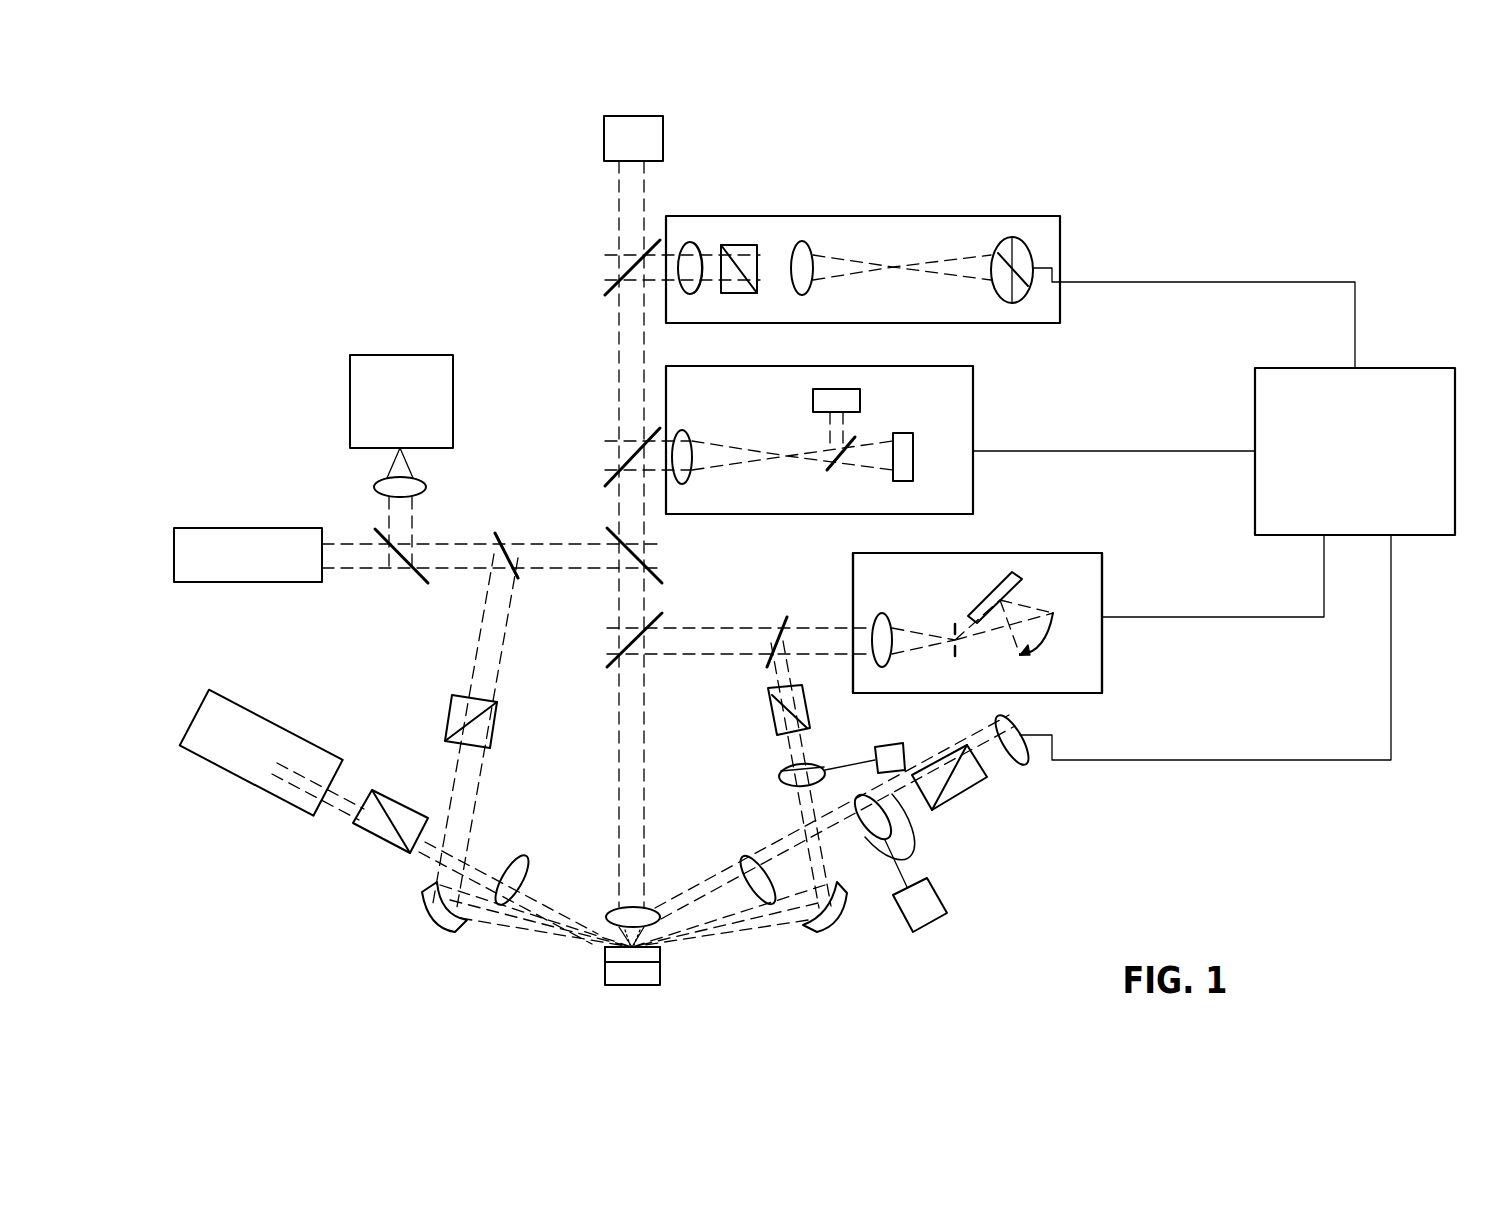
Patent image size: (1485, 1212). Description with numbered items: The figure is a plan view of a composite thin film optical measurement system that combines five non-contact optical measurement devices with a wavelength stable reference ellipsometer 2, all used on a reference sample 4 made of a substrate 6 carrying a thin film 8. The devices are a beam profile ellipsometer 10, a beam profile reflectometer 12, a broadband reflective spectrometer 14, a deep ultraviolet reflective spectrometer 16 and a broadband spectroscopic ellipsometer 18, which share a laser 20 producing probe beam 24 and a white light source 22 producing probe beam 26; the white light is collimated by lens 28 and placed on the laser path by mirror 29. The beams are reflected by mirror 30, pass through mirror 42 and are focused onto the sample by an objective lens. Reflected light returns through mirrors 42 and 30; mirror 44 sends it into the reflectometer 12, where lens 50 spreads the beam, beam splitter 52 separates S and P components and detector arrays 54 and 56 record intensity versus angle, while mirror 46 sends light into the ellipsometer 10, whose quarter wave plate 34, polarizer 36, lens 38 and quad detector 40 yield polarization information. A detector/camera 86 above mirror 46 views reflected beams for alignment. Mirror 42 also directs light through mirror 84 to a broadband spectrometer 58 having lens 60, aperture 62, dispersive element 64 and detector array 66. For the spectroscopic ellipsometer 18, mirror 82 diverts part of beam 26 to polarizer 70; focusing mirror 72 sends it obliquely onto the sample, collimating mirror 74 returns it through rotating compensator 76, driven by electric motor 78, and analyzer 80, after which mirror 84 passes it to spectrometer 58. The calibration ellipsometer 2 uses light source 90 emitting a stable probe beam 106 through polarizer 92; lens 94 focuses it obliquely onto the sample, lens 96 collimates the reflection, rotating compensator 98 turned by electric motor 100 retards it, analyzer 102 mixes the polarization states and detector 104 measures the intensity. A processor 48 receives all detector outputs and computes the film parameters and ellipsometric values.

The reference ellipsometer 2 is at (338, 818).
The reference sample 4 is at (596, 972).
The substrate 6 is at (660, 975).
The thin film 8 is at (660, 955).
The beam profile ellipsometer 10 is at (884, 216).
The beam profile reflectometer 12 is at (973, 385).
The broadband reflective spectrometer 14 is at (990, 553).
The deep ultra violet reflective spectrometer 16 is at (1010, 530).
The broadband spectroscopic ellipsometer 18 is at (526, 945).
The laser 20 is at (213, 582).
The white light source 22 is at (403, 355).
The probe beam 24 is at (387, 570).
The probe beam 26 is at (414, 510).
The lens 28 is at (423, 480).
The mirror 29 is at (420, 585).
The mirror 30 is at (655, 570).
The quarter wave plate 34 is at (690, 242).
The polarizer 36 is at (739, 245).
The lens 38 is at (805, 242).
The quad detector 40 is at (1020, 240).
The mirror 42 is at (613, 655).
The mirror 44 is at (613, 477).
The mirror 46 is at (613, 285).
The processor 48 is at (1338, 481).
The lens 50 is at (690, 435).
The beam splitter 52 is at (826, 475).
The linear detector array 54 is at (913, 455).
The linear detector array 56 is at (860, 400).
The broadband spectrometer 58 is at (1103, 572).
The lens 60 is at (888, 615).
The aperture 62 is at (958, 658).
The dispersive element 64 is at (1045, 650).
The detector array 66 is at (1022, 590).
The polarizer 70 is at (497, 725).
The focusing mirror 72 is at (433, 917).
The collimating mirror 74 is at (835, 935).
The rotating compensator 76 is at (780, 783).
The electric motor 78 is at (882, 745).
The analyzer 80 is at (807, 702).
The mirror 82 is at (500, 540).
The mirror 84 is at (770, 612).
The detector/camera 86 is at (663, 130).
The light source 90 is at (198, 757).
The polarizer 92 is at (392, 848).
The lens 94 is at (525, 860).
The lens 96 is at (763, 857).
The rotating compensator 98 is at (890, 827).
The electric motor 100 is at (940, 885).
The analyzer 102 is at (958, 797).
The detector 104 is at (1020, 765).
The probe beam 106 is at (352, 775).